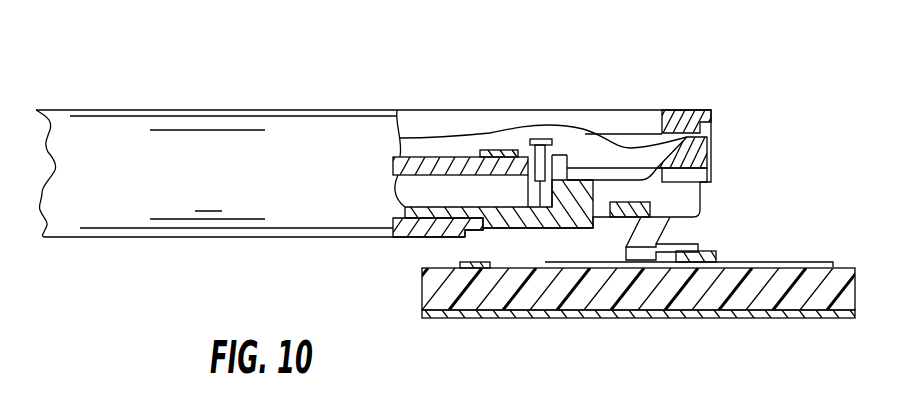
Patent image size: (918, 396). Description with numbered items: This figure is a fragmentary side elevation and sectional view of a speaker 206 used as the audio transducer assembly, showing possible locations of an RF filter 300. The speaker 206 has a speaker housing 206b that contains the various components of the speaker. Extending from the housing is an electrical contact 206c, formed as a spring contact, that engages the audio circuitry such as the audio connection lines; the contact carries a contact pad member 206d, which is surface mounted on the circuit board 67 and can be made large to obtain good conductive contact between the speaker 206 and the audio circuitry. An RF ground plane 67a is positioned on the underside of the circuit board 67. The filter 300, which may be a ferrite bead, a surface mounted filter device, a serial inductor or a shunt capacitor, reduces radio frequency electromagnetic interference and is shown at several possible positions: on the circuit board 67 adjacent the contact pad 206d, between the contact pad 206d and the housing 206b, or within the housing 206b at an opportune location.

The speaker 206 is at (382, 48).
The speaker housing 206b is at (103, 238).
The electrical contact 206c is at (703, 226).
The contact pad member 206d is at (787, 262).
The filter 300 is at (492, 152).
The circuit board 67 is at (422, 285).
The RF ground plane 67a is at (435, 318).